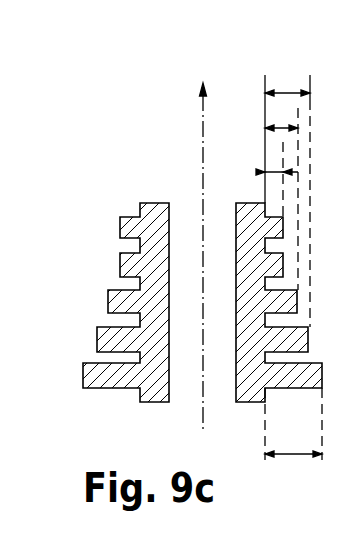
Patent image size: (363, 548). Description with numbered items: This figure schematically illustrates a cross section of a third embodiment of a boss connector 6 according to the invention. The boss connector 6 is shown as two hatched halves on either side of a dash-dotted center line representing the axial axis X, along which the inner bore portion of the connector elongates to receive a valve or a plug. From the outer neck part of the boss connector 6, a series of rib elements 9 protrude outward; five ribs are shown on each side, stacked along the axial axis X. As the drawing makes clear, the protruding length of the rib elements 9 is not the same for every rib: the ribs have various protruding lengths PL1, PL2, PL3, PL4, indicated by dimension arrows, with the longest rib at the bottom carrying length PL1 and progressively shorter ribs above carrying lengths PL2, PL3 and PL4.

The boss connector 6 is at (181, 252).
The rib elements 9 is at (87, 377).
The axial axis X is at (192, 256).
The protruding length PL1 is at (293, 440).
The protruding length PL2 is at (288, 188).
The protruding length PL3 is at (265, 128).
The protruding length PL4 is at (256, 172).